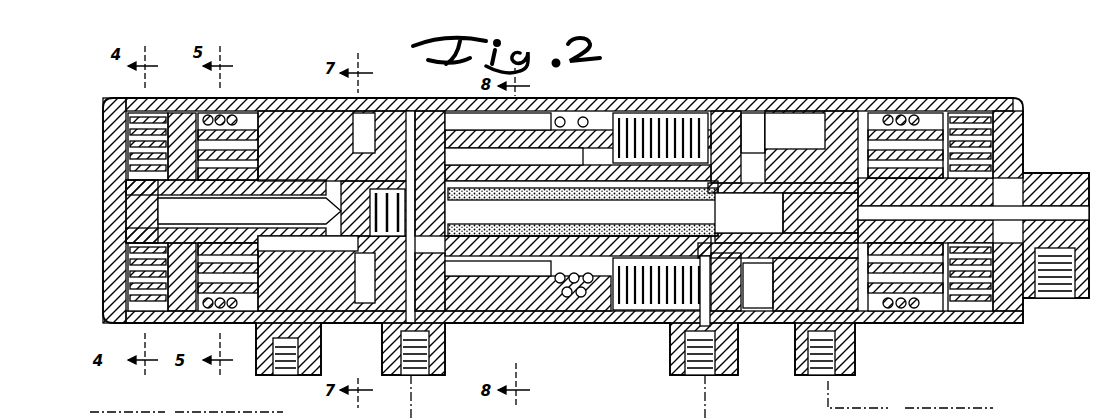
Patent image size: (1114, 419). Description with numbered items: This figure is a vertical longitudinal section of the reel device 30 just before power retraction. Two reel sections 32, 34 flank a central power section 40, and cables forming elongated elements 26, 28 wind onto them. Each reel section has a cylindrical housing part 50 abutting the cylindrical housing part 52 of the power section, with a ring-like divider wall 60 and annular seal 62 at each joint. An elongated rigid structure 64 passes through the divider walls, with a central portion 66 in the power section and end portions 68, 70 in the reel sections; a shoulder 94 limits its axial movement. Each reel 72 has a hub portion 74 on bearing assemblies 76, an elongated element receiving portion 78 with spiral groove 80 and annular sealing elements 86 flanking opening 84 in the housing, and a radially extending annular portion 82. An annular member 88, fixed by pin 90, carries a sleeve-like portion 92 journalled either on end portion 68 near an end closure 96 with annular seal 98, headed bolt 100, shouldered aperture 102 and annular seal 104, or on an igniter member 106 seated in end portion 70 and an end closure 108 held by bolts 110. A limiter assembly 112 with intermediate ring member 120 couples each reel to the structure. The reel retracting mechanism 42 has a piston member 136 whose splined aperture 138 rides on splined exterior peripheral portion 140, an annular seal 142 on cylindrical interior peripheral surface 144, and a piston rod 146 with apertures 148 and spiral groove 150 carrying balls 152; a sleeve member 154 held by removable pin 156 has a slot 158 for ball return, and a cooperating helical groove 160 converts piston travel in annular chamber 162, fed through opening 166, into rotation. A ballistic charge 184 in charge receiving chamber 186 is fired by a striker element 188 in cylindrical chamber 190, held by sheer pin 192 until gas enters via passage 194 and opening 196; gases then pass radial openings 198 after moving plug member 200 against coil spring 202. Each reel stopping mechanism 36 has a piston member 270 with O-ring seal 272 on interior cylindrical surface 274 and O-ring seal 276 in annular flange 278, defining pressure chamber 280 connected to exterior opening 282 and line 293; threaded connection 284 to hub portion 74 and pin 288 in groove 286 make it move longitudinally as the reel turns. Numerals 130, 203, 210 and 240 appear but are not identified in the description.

The elongated element 26 is at (249, 211).
The elongated element 28 is at (905, 310).
The reel device 30 is at (835, 90).
The reel section 32 is at (95, 92).
The reel section 34 is at (998, 90).
The reel stopping mechanism 36 is at (292, 103).
The central power section 40 is at (633, 103).
The fluid actuated reel retracting mechanism 42 is at (418, 103).
The cylindrical housing part 50 is at (125, 90).
The cylindrical housing part 52 is at (542, 358).
The ring-like divider wall 60 is at (718, 103).
The annular seal 62 is at (735, 103).
The elongated rigid structure 64 is at (648, 315).
The central portion 66 is at (567, 110).
The end portion 68 is at (240, 190).
The end portion 70 is at (900, 103).
The reel 72 is at (228, 105).
The cylindrical hub portion 74 is at (345, 103).
The bearing assemblies 76 is at (268, 190).
The elongated element receiving portion 78 is at (165, 103).
The spiral groove 80 is at (200, 105).
The radially extending annular portion 82 is at (270, 103).
The opening 84 is at (240, 105).
The annular sealing elements 86 is at (958, 310).
The annular member 88 is at (160, 250).
The pin 90 is at (160, 280).
The sleeve-like portion 92 is at (118, 153).
The shoulder 94 is at (660, 193).
The end closure 96 is at (118, 222).
The annular seal 98 is at (118, 108).
The headed bolt 100 is at (118, 190).
The shouldered aperture 102 is at (118, 176).
The annular seal 104 is at (118, 243).
The igniter member 106 is at (1030, 165).
The end closure 108 is at (1020, 113).
The bolts 110 is at (1008, 315).
The limiter assembly 112 is at (965, 105).
The intermediate ring member 120 is at (365, 278).
The retainer 130 is at (160, 135).
The piston member 136 is at (440, 330).
The splined aperture 138 is at (581, 208).
The splined exterior peripheral portion 140 is at (603, 212).
The annular seal 142 is at (460, 368).
The cylindrical interior peripheral surface 144 is at (512, 315).
The piston rod 146 is at (540, 105).
The apertures 148 is at (545, 315).
The spiral groove 150 is at (605, 303).
The balls 152 is at (600, 110).
The sleeve member 154 is at (562, 196).
The removable pin 156 is at (497, 303).
The longitudinally extending slot 158 is at (660, 284).
The cooperating helical groove 160 is at (655, 108).
The annular chamber 162 is at (662, 340).
The opening 166 is at (705, 367).
The ballistic charge 184 is at (432, 103).
The charge receiving chamber 186 is at (665, 140).
The striker element 188 is at (820, 213).
The cylindrical chamber 190 is at (811, 211).
The sheer pin 192 is at (973, 235).
The passage 194 is at (1025, 290).
The opening 196 is at (1063, 290).
The radial openings 198 is at (403, 103).
The plug member 200 is at (480, 200).
The coil spring 202 is at (333, 203).
The axis 203 is at (948, 400).
The chamber 210 is at (348, 133).
The chamber 240 is at (778, 220).
The piston member 270 is at (355, 318).
The O-ring seal 272 is at (305, 103).
The interior cylindrical surface 274 is at (360, 103).
The O-ring seal 276 is at (890, 103).
The annular flange 278 is at (265, 355).
The pressure chamber 280 is at (285, 367).
The exterior opening 282 is at (820, 375).
The threaded connection 284 is at (479, 258).
The groove 286 is at (338, 355).
The pin 288 is at (569, 347).
The separate lines 293 is at (145, 404).